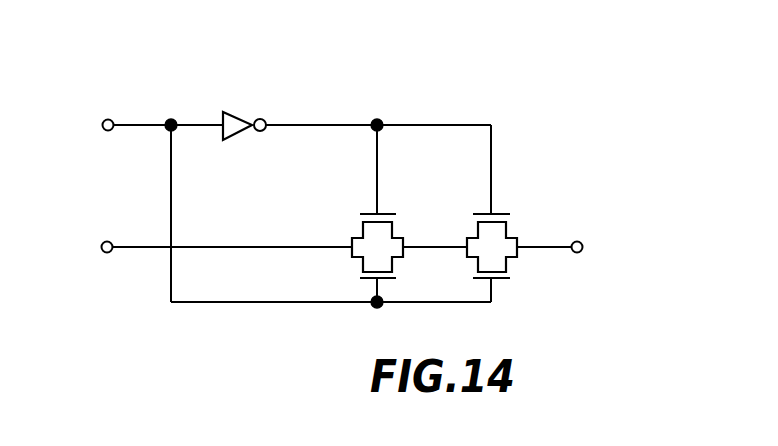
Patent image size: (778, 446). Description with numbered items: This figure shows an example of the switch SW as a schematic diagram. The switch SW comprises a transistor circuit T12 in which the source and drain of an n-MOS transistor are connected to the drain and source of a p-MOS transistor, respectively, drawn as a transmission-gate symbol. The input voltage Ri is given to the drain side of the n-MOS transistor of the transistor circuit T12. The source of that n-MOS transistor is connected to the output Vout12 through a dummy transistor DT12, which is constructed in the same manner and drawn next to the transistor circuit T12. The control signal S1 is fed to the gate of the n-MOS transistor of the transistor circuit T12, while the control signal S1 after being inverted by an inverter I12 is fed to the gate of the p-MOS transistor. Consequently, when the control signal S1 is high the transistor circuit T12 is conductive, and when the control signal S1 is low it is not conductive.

The switch SW is at (534, 90).
The control signal S1 is at (91, 124).
The input voltage Ri is at (88, 246).
The inverter I12 is at (244, 110).
The transistor circuit T12 is at (315, 244).
The dummy transistor DT12 is at (495, 244).
The output Vout12 is at (628, 249).